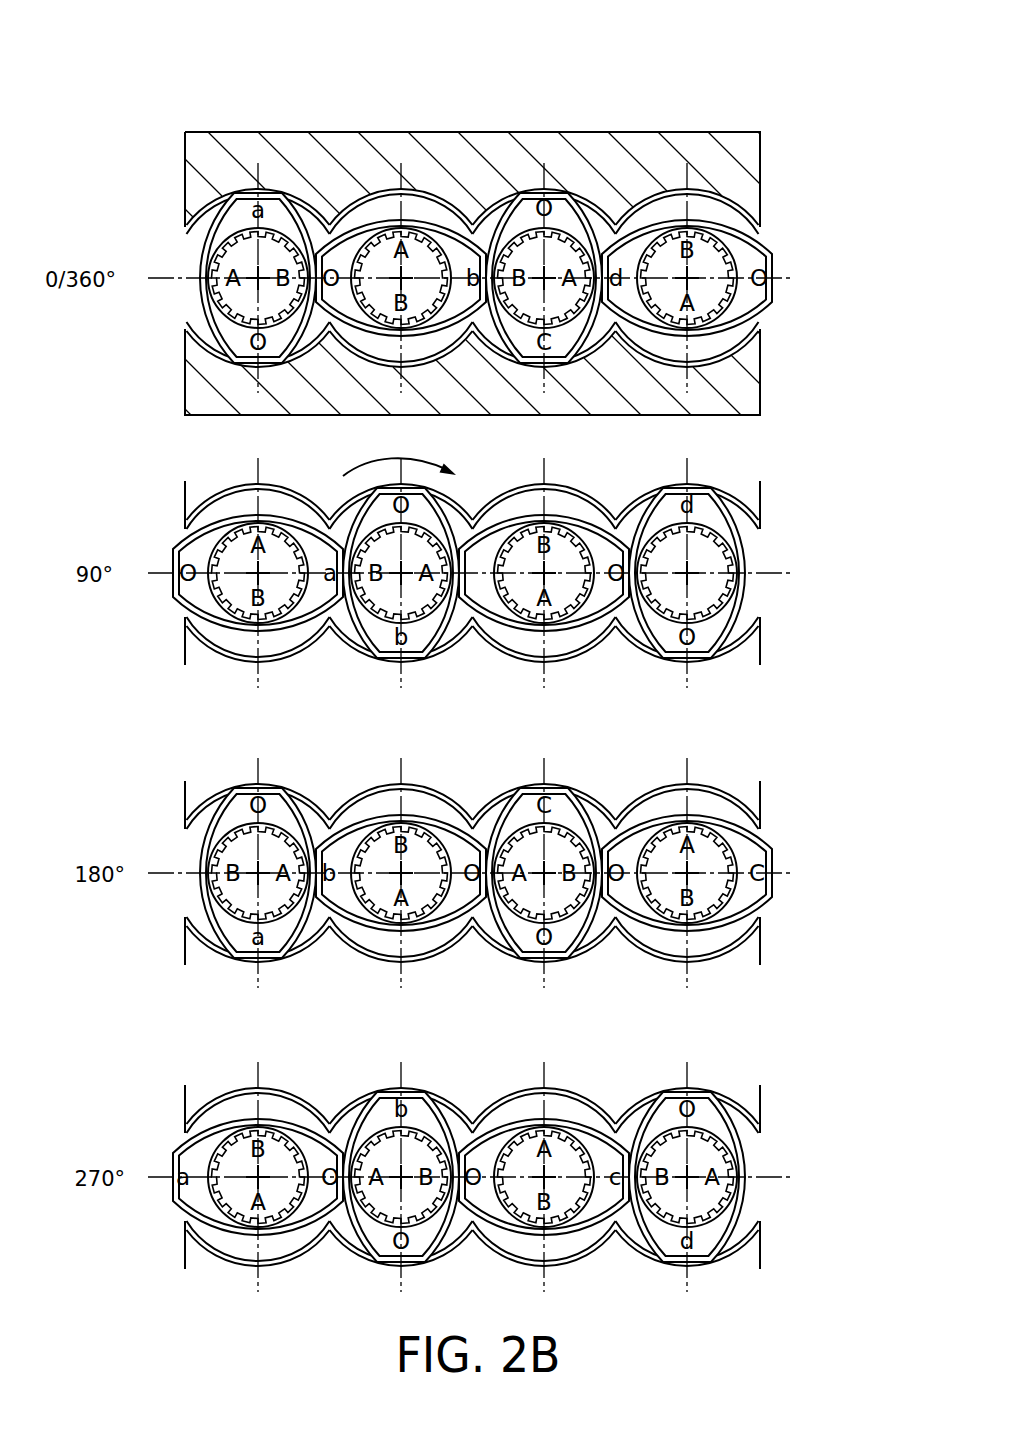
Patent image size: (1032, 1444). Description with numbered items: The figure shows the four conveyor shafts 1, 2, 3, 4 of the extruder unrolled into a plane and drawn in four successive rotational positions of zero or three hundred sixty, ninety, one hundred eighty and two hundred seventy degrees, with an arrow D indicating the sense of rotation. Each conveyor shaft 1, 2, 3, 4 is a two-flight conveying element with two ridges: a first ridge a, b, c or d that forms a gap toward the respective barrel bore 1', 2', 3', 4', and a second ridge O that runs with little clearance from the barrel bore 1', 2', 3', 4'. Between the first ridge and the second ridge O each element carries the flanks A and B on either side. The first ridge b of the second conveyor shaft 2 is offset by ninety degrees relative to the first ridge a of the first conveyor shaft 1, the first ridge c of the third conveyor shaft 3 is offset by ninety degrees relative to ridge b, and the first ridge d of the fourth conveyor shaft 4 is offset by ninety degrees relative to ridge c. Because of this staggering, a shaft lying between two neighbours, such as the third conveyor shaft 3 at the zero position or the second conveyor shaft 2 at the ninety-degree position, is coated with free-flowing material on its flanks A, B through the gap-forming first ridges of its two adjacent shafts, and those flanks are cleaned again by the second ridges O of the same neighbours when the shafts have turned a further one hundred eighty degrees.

The first conveyor shaft 1 is at (271, 53).
The second conveyor shaft 2 is at (419, 53).
The third conveyor shaft 3 is at (563, 56).
The fourth conveyor shaft 4 is at (691, 59).
The barrel bore 1' is at (254, 322).
The barrel bore 2' is at (401, 332).
The barrel bore 3' is at (557, 319).
The barrel bore 4' is at (710, 246).
The direction of rotation D is at (392, 460).